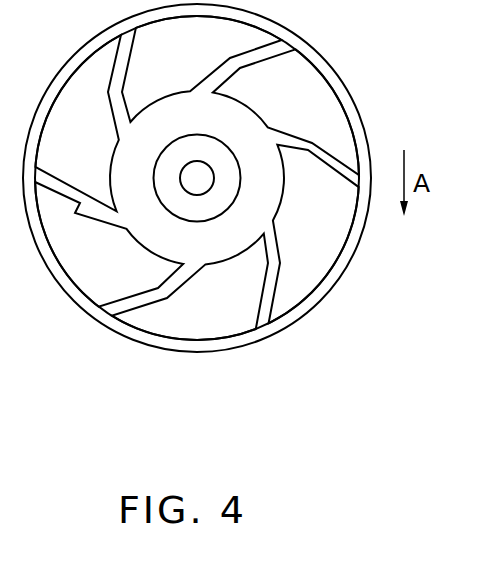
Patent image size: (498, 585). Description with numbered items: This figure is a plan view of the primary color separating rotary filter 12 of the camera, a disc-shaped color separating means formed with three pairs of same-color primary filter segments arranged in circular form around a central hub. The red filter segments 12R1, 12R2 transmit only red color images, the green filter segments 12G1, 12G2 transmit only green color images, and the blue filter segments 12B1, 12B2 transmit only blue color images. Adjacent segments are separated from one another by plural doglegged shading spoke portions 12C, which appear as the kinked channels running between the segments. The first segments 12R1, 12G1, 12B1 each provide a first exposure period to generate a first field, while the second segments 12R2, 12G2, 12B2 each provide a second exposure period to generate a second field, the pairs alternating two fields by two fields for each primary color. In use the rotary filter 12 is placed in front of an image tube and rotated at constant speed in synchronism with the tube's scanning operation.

The primary color separating rotary filter 12 is at (338, 283).
The doglegged shading spoke portions 12C is at (346, 170).
The first blue filter segment 12B1 is at (202, 69).
The second blue filter segment 12B2 is at (78, 123).
The first green filter segment 12G1 is at (314, 234).
The second green filter segment 12G2 is at (286, 112).
The first red filter segment 12R1 is at (109, 244).
The second red filter segment 12R2 is at (190, 287).